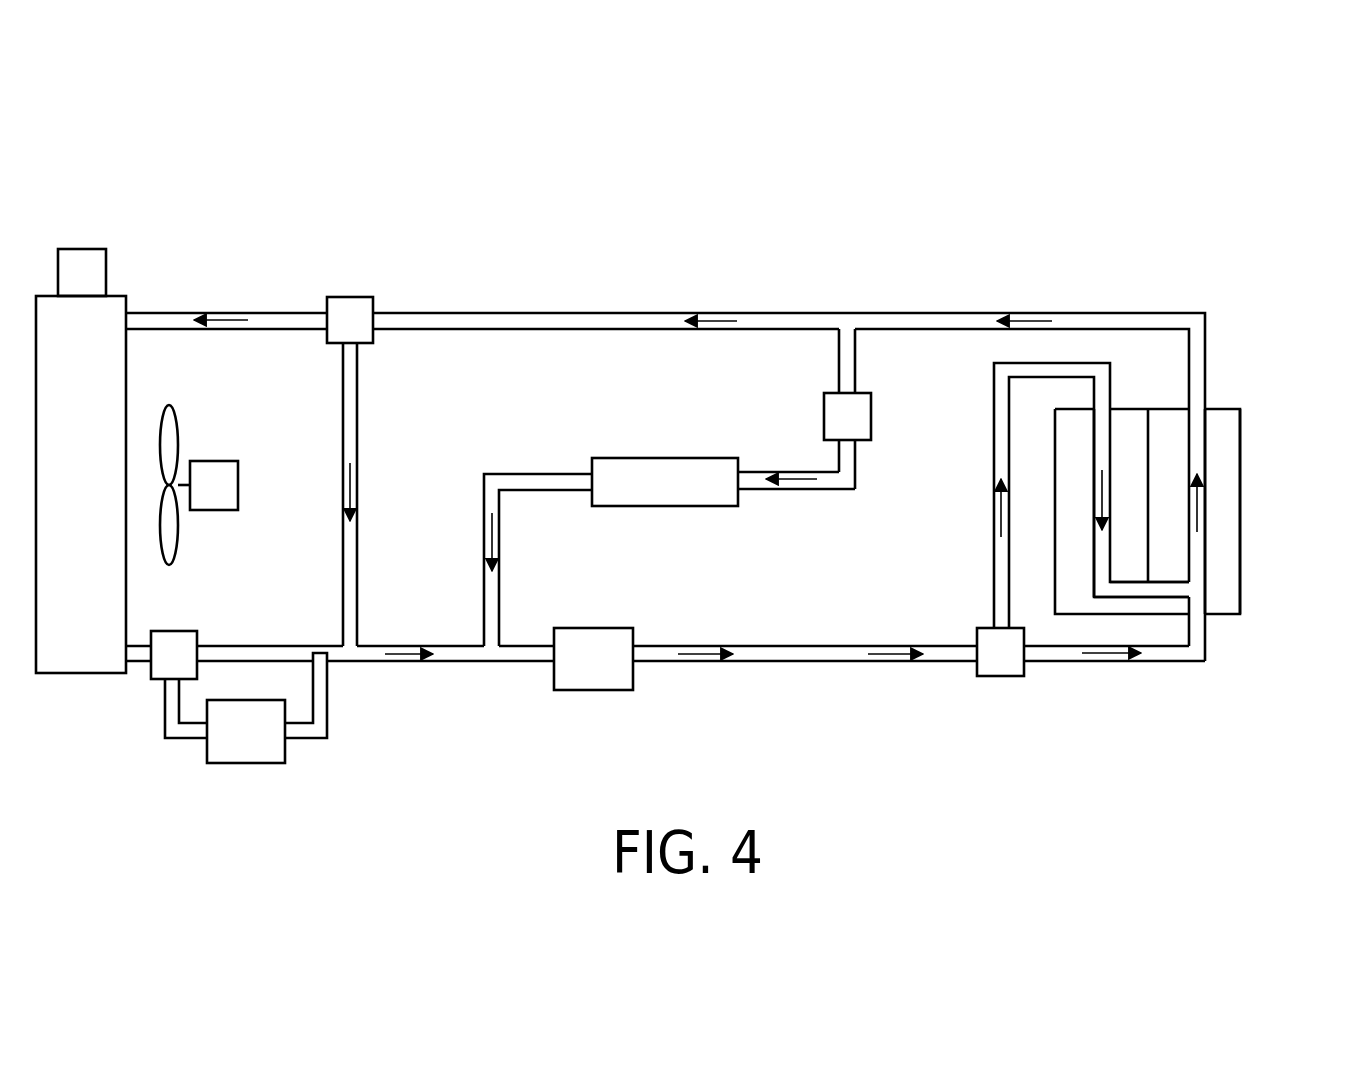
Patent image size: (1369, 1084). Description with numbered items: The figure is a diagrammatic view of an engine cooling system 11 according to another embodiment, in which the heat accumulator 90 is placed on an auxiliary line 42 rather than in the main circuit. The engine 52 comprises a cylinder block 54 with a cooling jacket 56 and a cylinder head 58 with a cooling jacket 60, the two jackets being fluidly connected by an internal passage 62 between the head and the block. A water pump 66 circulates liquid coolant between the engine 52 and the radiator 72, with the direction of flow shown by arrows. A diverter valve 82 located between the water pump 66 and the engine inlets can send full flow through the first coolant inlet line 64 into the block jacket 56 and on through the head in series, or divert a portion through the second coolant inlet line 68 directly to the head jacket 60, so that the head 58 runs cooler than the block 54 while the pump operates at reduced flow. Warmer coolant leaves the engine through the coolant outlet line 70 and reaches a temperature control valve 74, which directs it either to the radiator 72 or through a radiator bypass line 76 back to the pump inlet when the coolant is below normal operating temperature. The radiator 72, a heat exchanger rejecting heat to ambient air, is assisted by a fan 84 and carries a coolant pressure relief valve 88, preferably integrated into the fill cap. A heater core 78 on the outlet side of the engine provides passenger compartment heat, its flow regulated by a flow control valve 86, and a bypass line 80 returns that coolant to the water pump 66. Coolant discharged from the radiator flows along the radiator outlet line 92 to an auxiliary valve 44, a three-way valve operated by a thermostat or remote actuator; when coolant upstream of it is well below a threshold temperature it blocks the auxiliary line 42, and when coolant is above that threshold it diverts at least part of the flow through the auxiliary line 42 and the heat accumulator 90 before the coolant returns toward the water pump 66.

The cooling system 11 is at (769, 212).
The auxiliary line 42 is at (165, 725).
The auxiliary valve 44 is at (173, 631).
The engine 52 is at (1252, 444).
The cylinder block 54 is at (1042, 547).
The cooling jacket 56 is at (1110, 445).
The cylinder head 58 is at (1250, 538).
The cooling jacket 60 is at (1208, 529).
The internal passage 62 is at (1128, 600).
The first coolant inlet line 64 is at (994, 440).
The water pump 66 is at (611, 670).
The second coolant inlet line 68 is at (1053, 661).
The coolant outlet line 70 is at (1127, 313).
The radiator 72 is at (96, 485).
The temperature control valve 74 is at (345, 297).
The radiator bypass line 76 is at (357, 435).
The heater core 78 is at (680, 497).
The bypass line 80 is at (499, 590).
The diverter valve 82 is at (992, 676).
The fan 84 is at (209, 461).
The flow control valve 86 is at (824, 418).
The coolant pressure relief valve 88 is at (80, 249).
The heat accumulator 90 is at (270, 753).
The radiator outlet line 92 is at (135, 661).